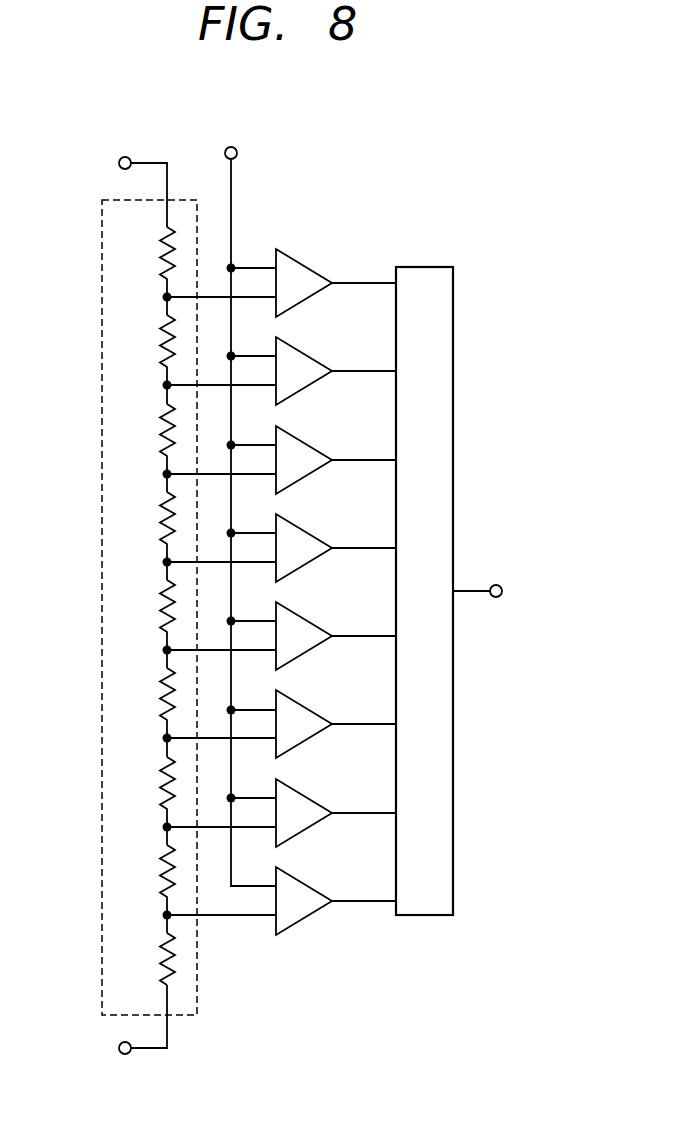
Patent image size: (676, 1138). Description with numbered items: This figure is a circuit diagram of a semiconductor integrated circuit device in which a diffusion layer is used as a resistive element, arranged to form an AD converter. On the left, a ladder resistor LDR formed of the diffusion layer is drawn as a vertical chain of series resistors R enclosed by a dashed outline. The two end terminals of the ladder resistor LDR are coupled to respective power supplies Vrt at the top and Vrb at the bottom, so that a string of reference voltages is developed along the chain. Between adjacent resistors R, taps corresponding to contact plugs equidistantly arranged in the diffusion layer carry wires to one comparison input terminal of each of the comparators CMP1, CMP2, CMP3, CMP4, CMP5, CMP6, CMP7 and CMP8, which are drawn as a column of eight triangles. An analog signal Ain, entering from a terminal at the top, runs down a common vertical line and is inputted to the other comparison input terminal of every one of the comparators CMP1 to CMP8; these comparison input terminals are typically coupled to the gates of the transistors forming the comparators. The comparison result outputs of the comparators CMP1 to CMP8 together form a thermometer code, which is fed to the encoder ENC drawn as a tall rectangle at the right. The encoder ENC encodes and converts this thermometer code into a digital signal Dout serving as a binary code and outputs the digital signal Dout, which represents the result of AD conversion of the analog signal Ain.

The power supply Vrt is at (123, 188).
The power supply Vrb is at (122, 1022).
The analog signal Ain is at (246, 503).
The digital signal Dout is at (507, 591).
The ladder resistor LDR is at (102, 293).
The resistor R is at (160, 959).
The comparator CMP1 is at (303, 265).
The comparator CMP2 is at (303, 353).
The comparator CMP3 is at (303, 442).
The comparator CMP4 is at (303, 530).
The comparator CMP5 is at (303, 618).
The comparator CMP6 is at (303, 706).
The comparator CMP7 is at (303, 795).
The comparator CMP8 is at (303, 883).
The encoder ENC is at (428, 267).